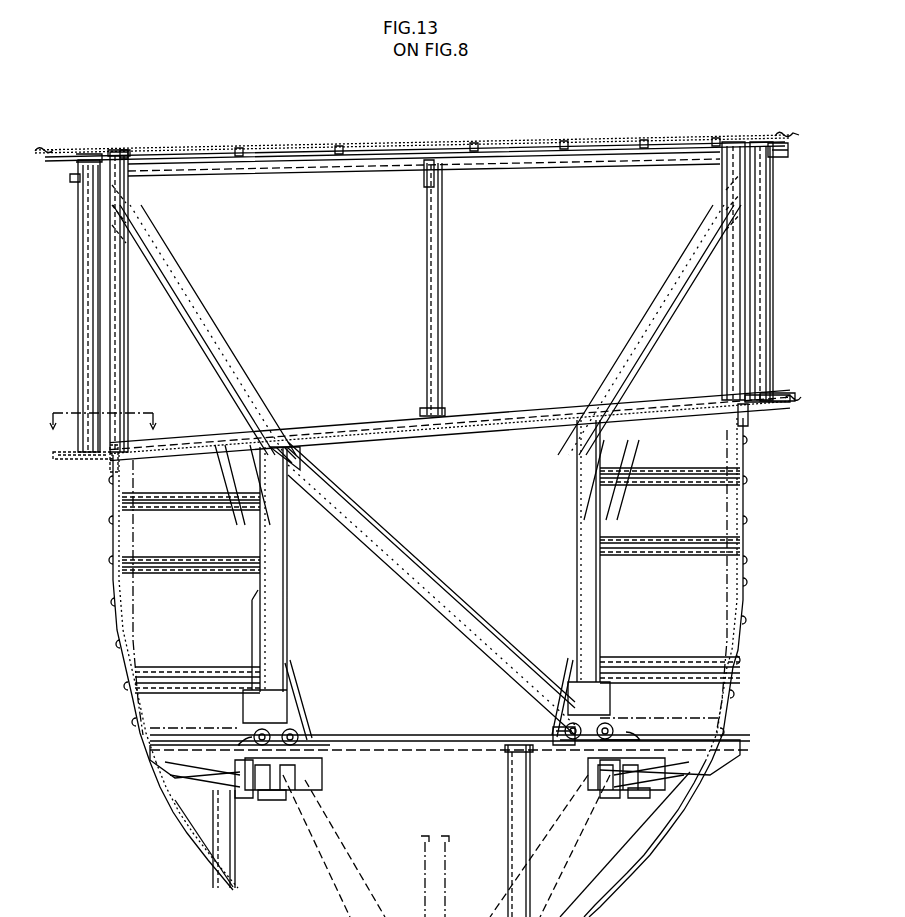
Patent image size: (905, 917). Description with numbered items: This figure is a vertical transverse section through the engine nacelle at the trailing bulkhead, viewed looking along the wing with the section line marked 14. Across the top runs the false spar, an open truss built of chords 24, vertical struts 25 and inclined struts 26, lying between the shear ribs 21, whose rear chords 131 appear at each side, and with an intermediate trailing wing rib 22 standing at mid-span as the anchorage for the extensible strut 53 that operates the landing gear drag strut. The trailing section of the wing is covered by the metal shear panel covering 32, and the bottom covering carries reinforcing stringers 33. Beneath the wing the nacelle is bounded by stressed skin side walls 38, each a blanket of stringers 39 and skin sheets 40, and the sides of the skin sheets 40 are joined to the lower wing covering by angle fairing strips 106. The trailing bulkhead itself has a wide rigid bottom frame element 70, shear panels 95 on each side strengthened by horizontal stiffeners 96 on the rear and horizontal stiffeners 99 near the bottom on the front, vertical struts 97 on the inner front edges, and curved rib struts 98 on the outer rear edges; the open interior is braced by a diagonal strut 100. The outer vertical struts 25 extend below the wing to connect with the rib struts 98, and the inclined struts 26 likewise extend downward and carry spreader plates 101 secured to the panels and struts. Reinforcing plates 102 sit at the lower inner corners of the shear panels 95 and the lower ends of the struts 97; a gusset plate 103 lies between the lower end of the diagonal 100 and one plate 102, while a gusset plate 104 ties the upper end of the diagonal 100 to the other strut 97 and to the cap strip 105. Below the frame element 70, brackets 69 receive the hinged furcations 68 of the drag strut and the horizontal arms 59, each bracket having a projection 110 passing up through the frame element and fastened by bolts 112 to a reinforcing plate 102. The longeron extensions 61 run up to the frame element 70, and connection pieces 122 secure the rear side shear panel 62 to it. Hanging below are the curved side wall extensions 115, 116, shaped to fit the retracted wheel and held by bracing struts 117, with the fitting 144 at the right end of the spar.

The section line 14- 14 is at (101, 408).
The shear rib 21 is at (92, 284).
The intermediate trailing wing rib 22 is at (440, 285).
The chord 24 is at (562, 168).
The vertical strut 25 is at (120, 350).
The inclined strut 26 is at (190, 346).
The metal shear panel covering 32 is at (552, 140).
The reinforcing stringer 33 is at (624, 143).
The stressed skin side wall 38 is at (106, 599).
The stringer 39 is at (747, 580).
The skin sheet 40 is at (745, 619).
The extensible strut 53 is at (420, 836).
The horizontal arm 59 is at (280, 799).
The longeron extension 61 is at (160, 780).
The side shear panel 62 is at (246, 798).
The furcation 68 is at (336, 863).
The bracket 69 is at (320, 770).
The bottom frame element 70 is at (429, 753).
The shear panel 95 is at (211, 606).
The horizontal stiffener 96 is at (194, 510).
The vertical strut 97 is at (285, 606).
The curved rib strut 98 is at (135, 597).
The horizontal stiffener 99 is at (204, 682).
The diagonal strut 100 is at (468, 616).
The spreader plate 101 is at (229, 478).
The reinforcing plate 102 is at (299, 690).
The gusset plate 103 is at (547, 741).
The gusset plate 104 is at (304, 446).
The cap strip 105 is at (482, 434).
The angle fairing strip 106 is at (110, 463).
The projection 110 is at (291, 724).
The bolt 112 is at (302, 740).
The curved side wall extension 115 is at (195, 845).
The curved side wall extension 116 is at (646, 868).
The bracing strut 117 is at (234, 852).
The connection piece 122 is at (214, 785).
The chord 131 is at (774, 153).
The end fitting 144 is at (774, 398).